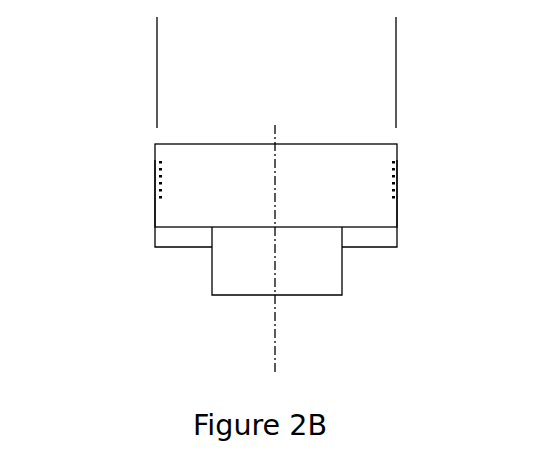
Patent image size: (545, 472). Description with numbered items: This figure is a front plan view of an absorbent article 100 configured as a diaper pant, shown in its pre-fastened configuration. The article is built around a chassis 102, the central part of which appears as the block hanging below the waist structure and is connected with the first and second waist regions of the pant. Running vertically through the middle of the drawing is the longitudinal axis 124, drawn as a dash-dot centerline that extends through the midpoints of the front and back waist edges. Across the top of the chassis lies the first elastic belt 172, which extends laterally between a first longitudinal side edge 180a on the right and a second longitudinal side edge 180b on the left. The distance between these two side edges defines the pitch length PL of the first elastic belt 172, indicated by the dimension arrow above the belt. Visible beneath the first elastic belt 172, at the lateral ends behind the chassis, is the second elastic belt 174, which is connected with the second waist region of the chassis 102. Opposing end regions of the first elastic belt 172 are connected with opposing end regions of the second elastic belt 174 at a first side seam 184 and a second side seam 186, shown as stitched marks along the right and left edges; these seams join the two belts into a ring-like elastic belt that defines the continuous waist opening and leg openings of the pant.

The pitch length PL is at (163, 39).
The absorbent article 100 is at (92, 266).
The chassis 102 is at (287, 275).
The longitudinal axis 124 is at (275, 347).
The first elastic belt 172 is at (247, 172).
The second elastic belt 174 is at (382, 238).
The first longitudinal side edge 180a is at (397, 213).
The second longitudinal side edge 180b is at (155, 209).
The first side seam 184 is at (397, 182).
The second side seam 186 is at (155, 170).